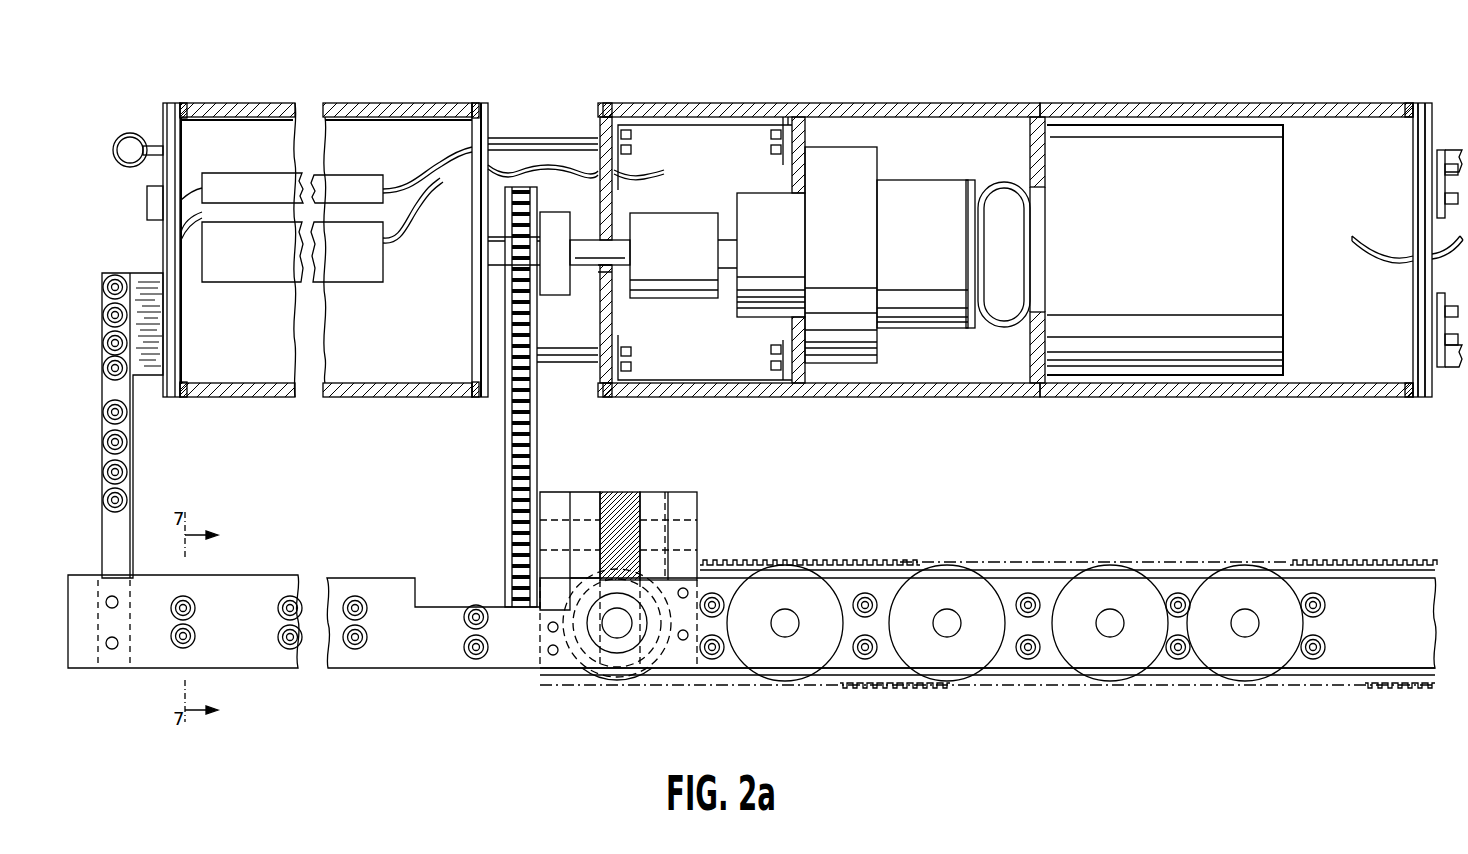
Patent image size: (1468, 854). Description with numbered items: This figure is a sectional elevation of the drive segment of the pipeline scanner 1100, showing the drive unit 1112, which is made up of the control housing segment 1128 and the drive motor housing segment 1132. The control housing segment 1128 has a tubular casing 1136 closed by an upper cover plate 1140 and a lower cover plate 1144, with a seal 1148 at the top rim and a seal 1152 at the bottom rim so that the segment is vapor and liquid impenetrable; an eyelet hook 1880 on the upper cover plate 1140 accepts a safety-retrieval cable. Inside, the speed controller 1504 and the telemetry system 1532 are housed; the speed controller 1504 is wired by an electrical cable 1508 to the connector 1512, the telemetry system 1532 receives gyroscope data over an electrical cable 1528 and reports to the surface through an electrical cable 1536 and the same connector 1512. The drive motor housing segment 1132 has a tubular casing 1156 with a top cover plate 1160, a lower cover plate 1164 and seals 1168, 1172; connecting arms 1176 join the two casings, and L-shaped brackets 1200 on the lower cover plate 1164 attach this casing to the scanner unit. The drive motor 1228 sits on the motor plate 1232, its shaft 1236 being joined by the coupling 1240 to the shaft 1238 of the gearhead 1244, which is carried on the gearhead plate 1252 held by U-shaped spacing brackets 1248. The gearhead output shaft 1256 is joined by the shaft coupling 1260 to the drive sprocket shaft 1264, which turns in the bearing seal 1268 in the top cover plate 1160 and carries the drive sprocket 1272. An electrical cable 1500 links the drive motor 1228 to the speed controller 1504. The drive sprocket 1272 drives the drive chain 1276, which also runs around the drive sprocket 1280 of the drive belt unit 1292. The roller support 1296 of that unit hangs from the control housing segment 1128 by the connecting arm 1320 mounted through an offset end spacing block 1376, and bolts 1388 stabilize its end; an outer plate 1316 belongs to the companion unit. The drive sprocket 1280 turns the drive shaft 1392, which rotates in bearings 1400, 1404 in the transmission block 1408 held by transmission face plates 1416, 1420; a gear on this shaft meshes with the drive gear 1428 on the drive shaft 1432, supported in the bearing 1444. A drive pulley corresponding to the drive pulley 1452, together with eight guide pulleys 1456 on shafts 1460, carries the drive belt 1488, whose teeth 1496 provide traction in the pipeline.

The pipeline scanner 1100 is at (906, 82).
The drive unit 1112 is at (434, 92).
The control housing segment 1128 is at (272, 92).
The drive motor housing segment 1132 is at (972, 93).
The tubular casing 1136 is at (232, 104).
The upper cover plate 1140 is at (166, 115).
The lower cover plate 1144 is at (478, 143).
The seal 1148 is at (183, 104).
The seal 1152 is at (480, 104).
The tubular casing 1156 is at (842, 112).
The top cover plate 1160 is at (600, 135).
The lower cover plate 1164 is at (1425, 180).
The seal 1168 is at (606, 103).
The seal 1172 is at (1413, 105).
The connecting arms 1176 is at (505, 145).
The L-shaped brackets 1200 is at (1440, 158).
The drive motor 1228 is at (1178, 150).
The motor plate 1232 is at (1040, 125).
The shaft 1236 is at (1042, 245).
The shaft 1238 is at (968, 255).
The coupling 1240 is at (1000, 195).
The gearhead 1244 is at (862, 170).
The U-shaped spacing brackets 1248 is at (660, 130).
The gearhead plate 1252 is at (800, 118).
The shaft 1256 is at (730, 243).
The shaft coupling 1260 is at (672, 218).
The drive sprocket shaft 1264 is at (588, 250).
The bearing seal 1268 is at (598, 272).
The drive sprocket 1272 is at (555, 228).
The drive chain 1276 is at (522, 450).
The drive sprocket 1280 is at (504, 528).
The drive belt unit 1292 is at (1018, 698).
The roller support 1296 is at (522, 685).
The outer plate 1316 is at (408, 660).
The connecting arm 1320 is at (142, 470).
The offset end spacing block 1376 is at (150, 336).
The bolts 1388 is at (195, 628).
The drive shaft 1392 is at (698, 526).
The bearing 1400 is at (590, 520).
The bearing 1404 is at (690, 476).
The transmission block 1408 is at (672, 484).
The transmission face plate 1416 is at (558, 500).
The transmission face plate 1420 is at (692, 498).
The drive gear 1428 is at (635, 505).
The drive shaft 1432 is at (612, 630).
The bearing 1444 is at (638, 627).
The drive pulley 1452 is at (622, 672).
The guide pulleys 1456 is at (795, 675).
The shafts 1460 is at (787, 623).
The drive belt 1488 is at (1050, 560).
The teeth 1496 is at (1318, 558).
The electrical cable 1500 is at (400, 186).
The speed controller 1504 is at (345, 185).
The electrical cable 1508 is at (200, 188).
The connector 1512 is at (148, 200).
The electrical cable 1528 is at (410, 206).
The telemetry system 1532 is at (365, 260).
The electrical cable 1536 is at (181, 230).
The eyelet hook 1880 is at (121, 140).